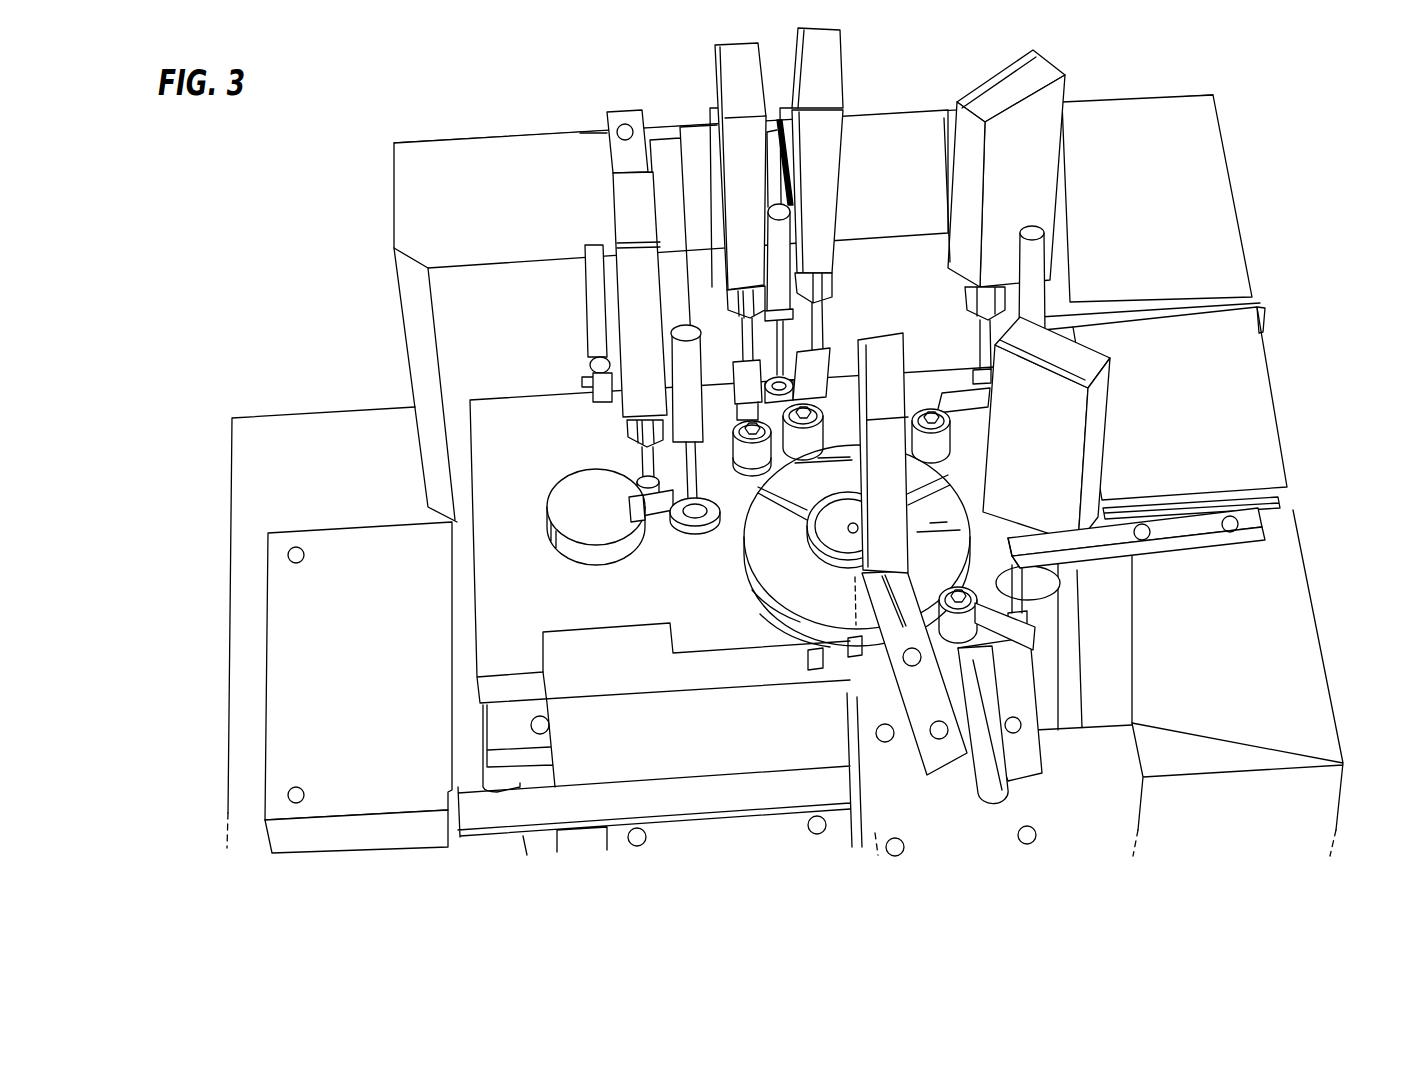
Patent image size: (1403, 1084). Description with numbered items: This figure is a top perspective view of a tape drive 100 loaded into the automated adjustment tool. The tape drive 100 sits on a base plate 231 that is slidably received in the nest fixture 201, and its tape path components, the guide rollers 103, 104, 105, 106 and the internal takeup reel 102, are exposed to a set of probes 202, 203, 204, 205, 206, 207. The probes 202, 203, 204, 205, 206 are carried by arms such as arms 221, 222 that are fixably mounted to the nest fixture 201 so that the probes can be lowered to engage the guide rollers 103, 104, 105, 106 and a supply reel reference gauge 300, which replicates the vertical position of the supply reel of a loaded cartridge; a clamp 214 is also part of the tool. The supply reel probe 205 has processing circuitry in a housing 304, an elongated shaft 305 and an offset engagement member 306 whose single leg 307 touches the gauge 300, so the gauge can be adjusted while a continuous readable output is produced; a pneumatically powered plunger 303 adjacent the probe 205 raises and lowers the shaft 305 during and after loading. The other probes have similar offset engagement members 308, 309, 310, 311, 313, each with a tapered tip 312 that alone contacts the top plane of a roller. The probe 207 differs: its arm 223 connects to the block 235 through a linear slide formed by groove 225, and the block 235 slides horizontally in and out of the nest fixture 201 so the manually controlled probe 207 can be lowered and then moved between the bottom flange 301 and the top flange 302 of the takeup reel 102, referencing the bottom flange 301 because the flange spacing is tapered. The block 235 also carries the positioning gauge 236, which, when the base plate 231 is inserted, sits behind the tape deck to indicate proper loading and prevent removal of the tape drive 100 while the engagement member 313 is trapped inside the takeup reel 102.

The tape drive 100 is at (493, 533).
The takeup reel 102 is at (857, 545).
The guide roller 103 is at (748, 466).
The guide roller 104 is at (813, 440).
The guide roller 105 is at (928, 395).
The guide roller 106 is at (965, 626).
The nest fixture 201 is at (394, 196).
The probe 202 is at (717, 83).
The probe 203 is at (843, 87).
The probe 204 is at (1057, 93).
The supply reel probe 205 is at (625, 195).
The probe 206 is at (1100, 433).
The probe 207 is at (883, 453).
The clamp 214 is at (598, 392).
The arm 221 is at (610, 110).
The arm 222 is at (1213, 550).
The arm 223 is at (952, 767).
The groove 225 is at (990, 763).
The base plate 231 is at (500, 727).
The block 235 is at (1027, 792).
The positioning gauge 236 is at (673, 797).
The supply reel reference gauge 300 is at (567, 494).
The bottom flange 301 is at (748, 583).
The top flange 302 is at (777, 622).
The plunger 303 is at (692, 540).
The housing 304 is at (640, 361).
The elongated shaft 305 is at (640, 463).
The engagement member 306 is at (663, 518).
The leg 307 is at (631, 522).
The engagement member 308 is at (740, 439).
The engagement member 309 is at (822, 383).
The engagement member 310 is at (960, 387).
The engagement member 311 is at (1050, 622).
The tapered tip 312 is at (800, 380).
The engagement member 313 is at (857, 637).